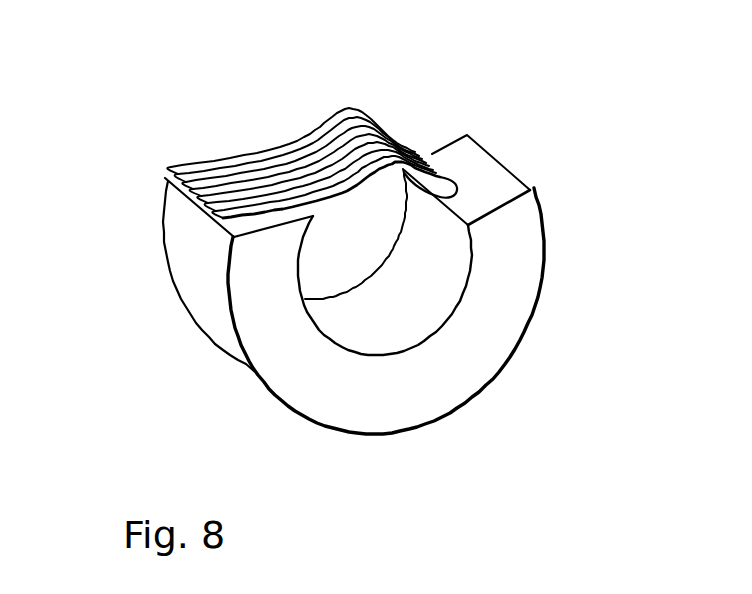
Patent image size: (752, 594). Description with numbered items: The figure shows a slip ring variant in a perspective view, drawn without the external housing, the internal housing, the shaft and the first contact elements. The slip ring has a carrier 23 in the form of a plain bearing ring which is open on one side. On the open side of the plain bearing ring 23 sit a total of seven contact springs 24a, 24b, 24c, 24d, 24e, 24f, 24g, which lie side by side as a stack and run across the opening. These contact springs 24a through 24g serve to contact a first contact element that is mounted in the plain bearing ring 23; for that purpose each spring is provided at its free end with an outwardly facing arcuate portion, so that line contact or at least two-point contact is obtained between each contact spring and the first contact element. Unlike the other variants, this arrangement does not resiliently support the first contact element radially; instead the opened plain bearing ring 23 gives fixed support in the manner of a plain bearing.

The carrier 23 is at (502, 327).
The contact spring 24a is at (164, 176).
The contact spring 24b is at (168, 167).
The contact spring 24c is at (255, 177).
The contact spring 24d is at (272, 185).
The contact spring 24e is at (347, 165).
The contact spring 24f is at (378, 152).
The contact spring 24g is at (430, 157).